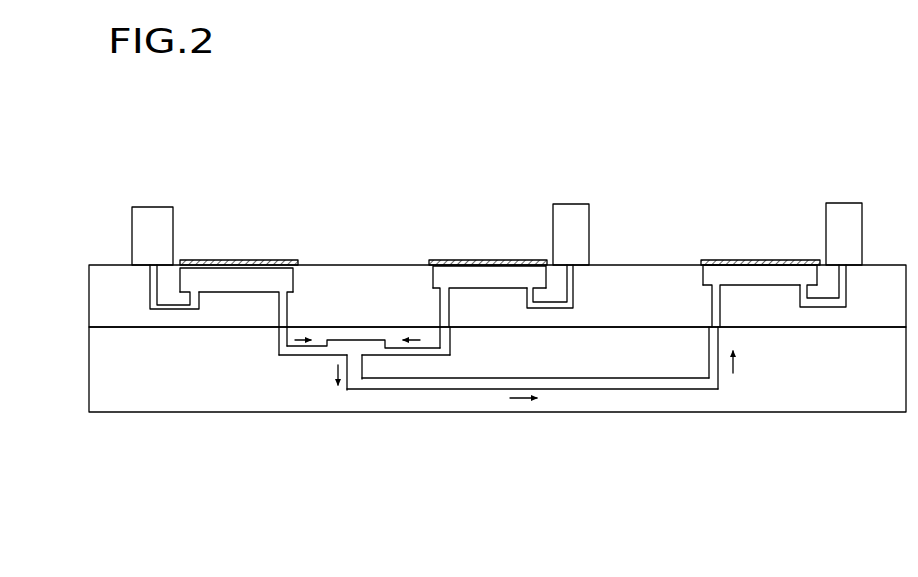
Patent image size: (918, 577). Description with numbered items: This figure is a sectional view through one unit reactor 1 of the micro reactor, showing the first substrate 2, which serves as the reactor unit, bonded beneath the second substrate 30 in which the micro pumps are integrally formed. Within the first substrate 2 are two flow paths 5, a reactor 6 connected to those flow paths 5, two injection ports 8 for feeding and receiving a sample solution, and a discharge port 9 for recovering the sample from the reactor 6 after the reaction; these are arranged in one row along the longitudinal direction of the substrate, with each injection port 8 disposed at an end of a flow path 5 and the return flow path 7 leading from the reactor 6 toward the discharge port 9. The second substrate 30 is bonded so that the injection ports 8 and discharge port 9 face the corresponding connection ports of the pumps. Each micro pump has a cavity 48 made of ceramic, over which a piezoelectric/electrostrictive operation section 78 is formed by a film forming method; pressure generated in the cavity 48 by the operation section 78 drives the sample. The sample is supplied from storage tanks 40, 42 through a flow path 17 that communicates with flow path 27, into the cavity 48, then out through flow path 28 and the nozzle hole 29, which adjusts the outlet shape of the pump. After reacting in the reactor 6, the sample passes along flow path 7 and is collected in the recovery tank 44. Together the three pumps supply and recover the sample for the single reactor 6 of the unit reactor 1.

The unit reactor 1 is at (878, 462).
The first substrate 2 is at (768, 393).
The flow path 5 is at (297, 357).
The reactor 6 is at (344, 362).
The flow path 7 is at (574, 391).
The injection port 8 is at (282, 335).
The discharge port 9 is at (722, 329).
The flow path 17 is at (152, 295).
The flow path 27 is at (198, 307).
The flow path 28 is at (283, 302).
The nozzle hole 29 is at (282, 331).
The second substrate 30 is at (883, 305).
The storage tank 40 is at (161, 213).
The storage tank 42 is at (578, 212).
The recovery tank 44 is at (845, 212).
The cavity 48 is at (232, 280).
The piezoelectric/electrostrictive operation section 78 is at (274, 261).